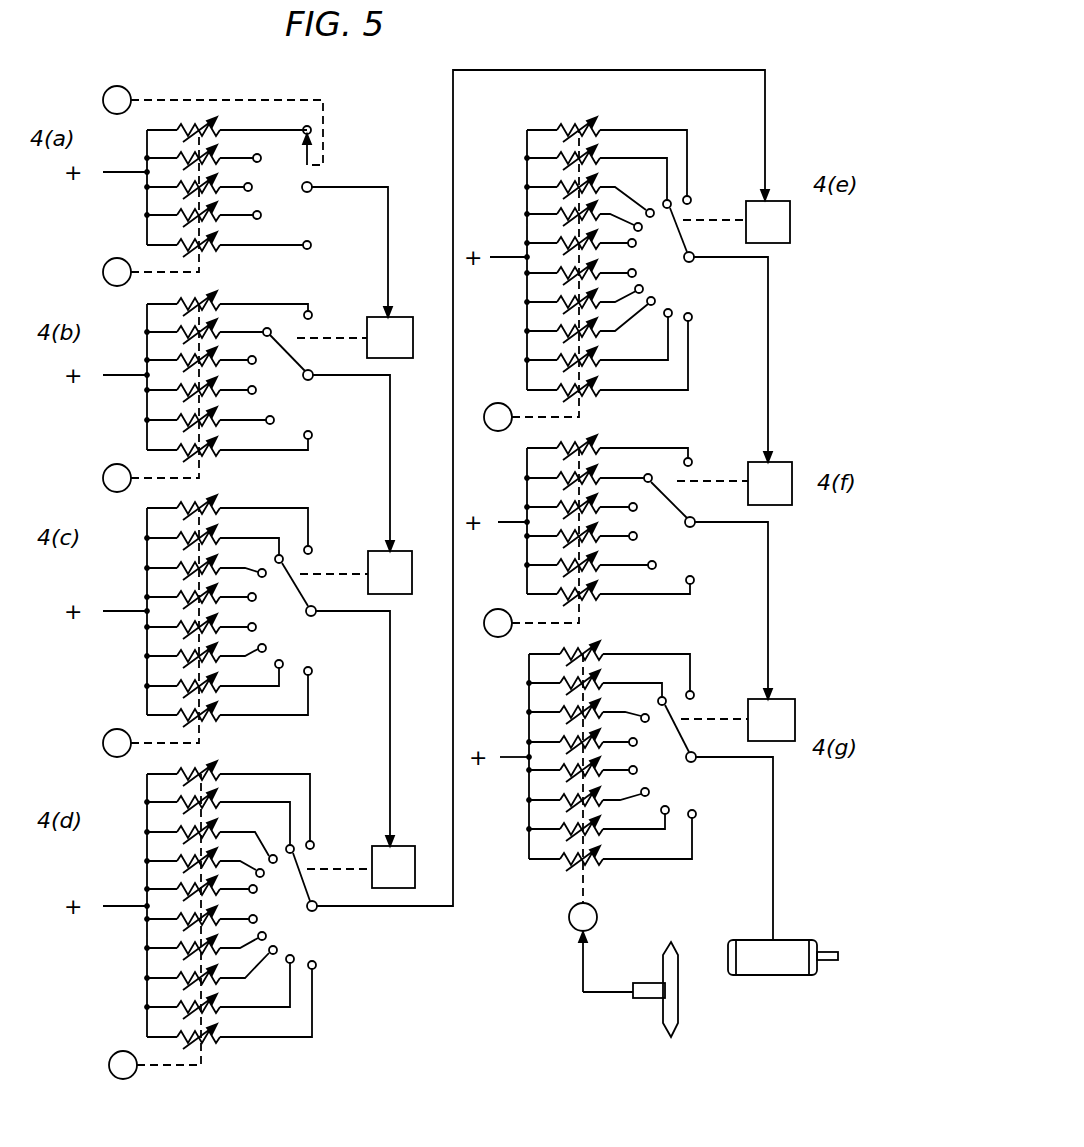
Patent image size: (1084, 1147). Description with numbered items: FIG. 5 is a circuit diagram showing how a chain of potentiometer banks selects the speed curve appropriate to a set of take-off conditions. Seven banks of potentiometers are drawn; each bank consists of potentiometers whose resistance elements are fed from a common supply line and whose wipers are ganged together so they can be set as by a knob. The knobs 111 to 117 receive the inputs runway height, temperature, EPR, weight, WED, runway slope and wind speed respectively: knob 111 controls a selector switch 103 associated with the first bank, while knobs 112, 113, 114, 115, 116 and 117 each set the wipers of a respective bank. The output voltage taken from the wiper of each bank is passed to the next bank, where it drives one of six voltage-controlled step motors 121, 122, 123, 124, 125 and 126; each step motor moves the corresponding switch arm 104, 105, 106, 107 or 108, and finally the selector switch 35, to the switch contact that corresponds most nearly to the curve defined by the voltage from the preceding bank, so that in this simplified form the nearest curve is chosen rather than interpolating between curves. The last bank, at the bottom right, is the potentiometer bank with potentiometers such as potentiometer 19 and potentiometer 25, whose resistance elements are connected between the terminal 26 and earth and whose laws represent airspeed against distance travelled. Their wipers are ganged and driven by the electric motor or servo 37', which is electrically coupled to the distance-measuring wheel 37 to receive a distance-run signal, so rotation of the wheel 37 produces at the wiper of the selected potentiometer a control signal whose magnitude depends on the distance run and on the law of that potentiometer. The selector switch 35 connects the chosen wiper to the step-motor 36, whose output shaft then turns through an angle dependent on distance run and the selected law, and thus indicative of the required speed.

The potentiometer 19 is at (568, 655).
The potentiometer 25 is at (603, 862).
The terminal 26 is at (513, 757).
The selector switch 35 is at (687, 761).
The step-motor 36 is at (757, 975).
The distance-measuring wheel 37 is at (655, 998).
The electric motor or servo 37' is at (558, 947).
The selector switch 103 is at (303, 189).
The switch arm 104 is at (304, 379).
The switch arm 105 is at (306, 614).
The switch arm 106 is at (314, 912).
The switch arm 107 is at (687, 263).
The switch arm 108 is at (687, 528).
The knob 111 is at (127, 91).
The knob 112 is at (112, 262).
The knob 113 is at (115, 462).
The knob 114 is at (114, 729).
The knob 115 is at (120, 1051).
The knob 116 is at (497, 403).
The knob 117 is at (502, 609).
The voltage-controlled step motor 121 is at (358, 316).
The voltage-controlled step motor 122 is at (356, 550).
The voltage-controlled step motor 123 is at (359, 846).
The voltage-controlled step motor 124 is at (789, 242).
The voltage-controlled step motor 125 is at (790, 505).
The voltage-controlled step motor 126 is at (784, 708).